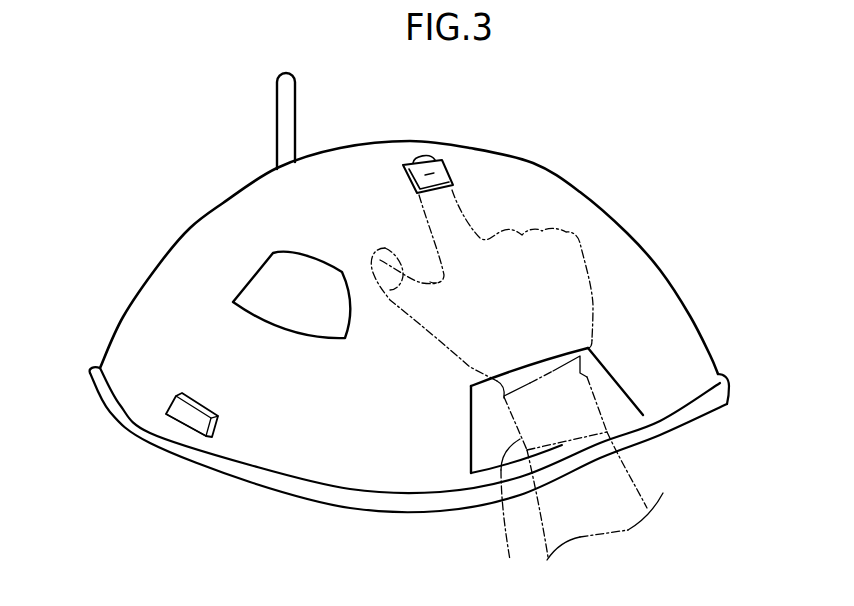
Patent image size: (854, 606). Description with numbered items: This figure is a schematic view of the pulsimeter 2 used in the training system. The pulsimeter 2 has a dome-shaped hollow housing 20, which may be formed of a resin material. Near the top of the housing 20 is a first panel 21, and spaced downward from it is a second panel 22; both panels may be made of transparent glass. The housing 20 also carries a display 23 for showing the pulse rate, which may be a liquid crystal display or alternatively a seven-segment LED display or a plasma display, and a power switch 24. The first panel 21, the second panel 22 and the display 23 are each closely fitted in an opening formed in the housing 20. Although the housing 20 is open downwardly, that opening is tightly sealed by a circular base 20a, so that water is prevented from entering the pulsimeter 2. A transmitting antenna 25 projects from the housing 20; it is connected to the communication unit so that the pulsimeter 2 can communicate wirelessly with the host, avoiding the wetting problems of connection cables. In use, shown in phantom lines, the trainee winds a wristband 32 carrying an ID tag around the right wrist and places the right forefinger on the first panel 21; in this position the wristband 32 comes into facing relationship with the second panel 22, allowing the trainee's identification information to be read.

The pulsimeter 2 is at (660, 233).
The housing 20 is at (535, 161).
The circular base 20a is at (311, 497).
The first panel 21 is at (404, 170).
The second panel 22 is at (636, 386).
The display 23 is at (243, 284).
The power switch 24 is at (173, 423).
The transmitting antenna 25 is at (277, 107).
The wristband 32 is at (512, 544).